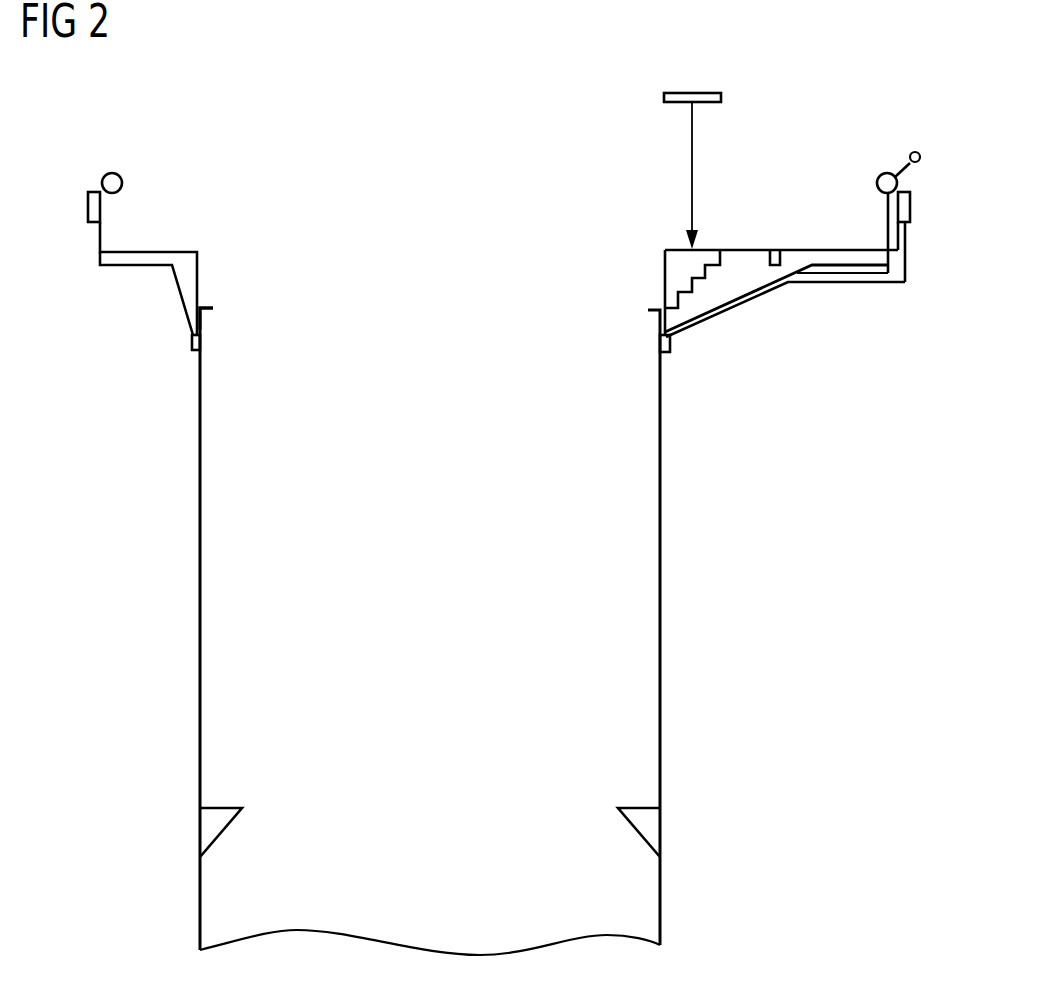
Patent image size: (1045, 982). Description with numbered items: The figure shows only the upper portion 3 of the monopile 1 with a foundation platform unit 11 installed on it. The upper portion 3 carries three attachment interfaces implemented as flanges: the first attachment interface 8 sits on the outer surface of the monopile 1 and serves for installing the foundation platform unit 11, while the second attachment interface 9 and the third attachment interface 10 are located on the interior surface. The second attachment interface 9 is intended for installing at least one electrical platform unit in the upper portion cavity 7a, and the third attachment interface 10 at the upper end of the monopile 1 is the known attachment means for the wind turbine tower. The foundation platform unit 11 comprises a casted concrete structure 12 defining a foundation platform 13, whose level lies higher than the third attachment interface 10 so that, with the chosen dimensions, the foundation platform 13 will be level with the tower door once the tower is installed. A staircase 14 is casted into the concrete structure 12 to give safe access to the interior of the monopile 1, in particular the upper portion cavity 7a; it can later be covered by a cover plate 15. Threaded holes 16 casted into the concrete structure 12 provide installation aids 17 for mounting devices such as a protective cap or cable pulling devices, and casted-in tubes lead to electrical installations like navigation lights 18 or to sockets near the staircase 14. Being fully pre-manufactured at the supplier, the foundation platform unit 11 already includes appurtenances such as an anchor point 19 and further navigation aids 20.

The monopile 1 is at (662, 690).
The upper portion 3 is at (272, 108).
The upper portion cavity 7a is at (415, 540).
The first attachment interface 8 is at (191, 345).
The second attachment interface 9 is at (217, 823).
The third attachment interface 10 is at (207, 308).
The foundation platform unit 11 is at (186, 292).
The casted concrete structure 12 is at (747, 283).
The foundation platform 13 is at (740, 250).
The staircase 14 is at (698, 282).
The cover plate 15 is at (692, 92).
The threaded holes 16 is at (783, 258).
The installation aids 17 is at (770, 236).
The navigation lights 18 is at (112, 173).
The anchor point 19 is at (915, 152).
The navigation aids 20 is at (88, 207).